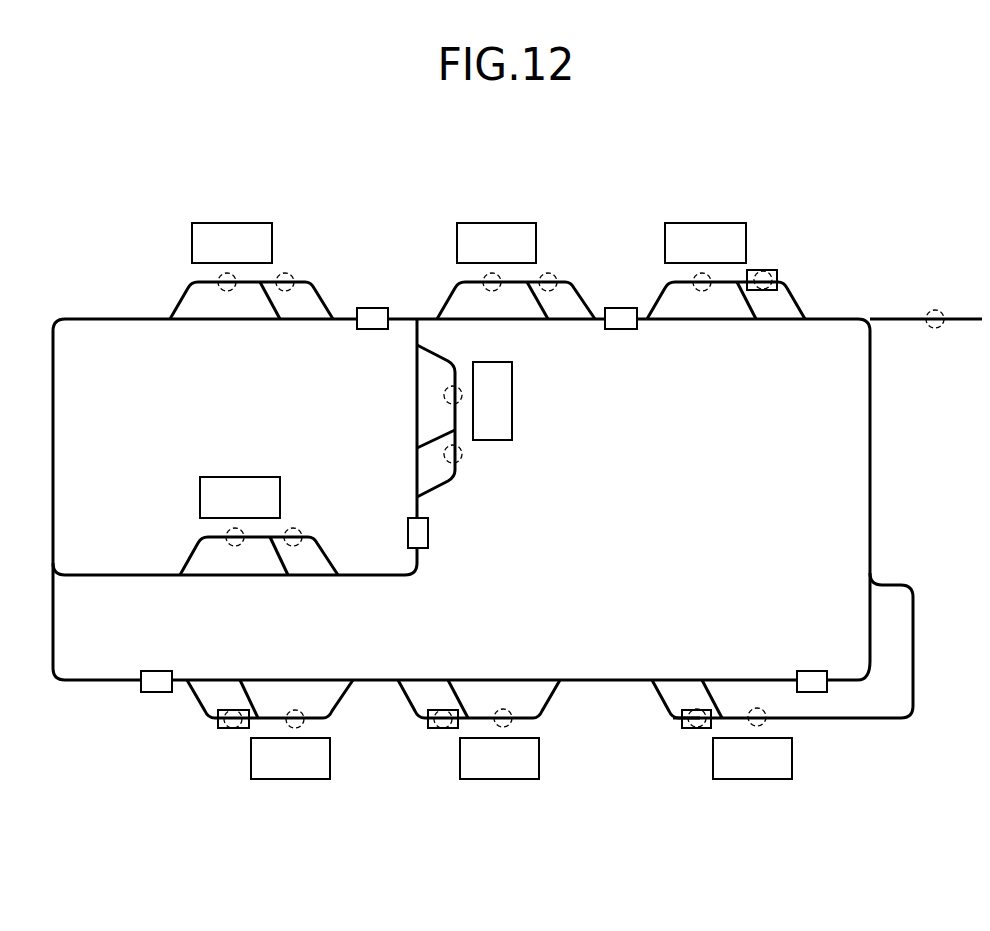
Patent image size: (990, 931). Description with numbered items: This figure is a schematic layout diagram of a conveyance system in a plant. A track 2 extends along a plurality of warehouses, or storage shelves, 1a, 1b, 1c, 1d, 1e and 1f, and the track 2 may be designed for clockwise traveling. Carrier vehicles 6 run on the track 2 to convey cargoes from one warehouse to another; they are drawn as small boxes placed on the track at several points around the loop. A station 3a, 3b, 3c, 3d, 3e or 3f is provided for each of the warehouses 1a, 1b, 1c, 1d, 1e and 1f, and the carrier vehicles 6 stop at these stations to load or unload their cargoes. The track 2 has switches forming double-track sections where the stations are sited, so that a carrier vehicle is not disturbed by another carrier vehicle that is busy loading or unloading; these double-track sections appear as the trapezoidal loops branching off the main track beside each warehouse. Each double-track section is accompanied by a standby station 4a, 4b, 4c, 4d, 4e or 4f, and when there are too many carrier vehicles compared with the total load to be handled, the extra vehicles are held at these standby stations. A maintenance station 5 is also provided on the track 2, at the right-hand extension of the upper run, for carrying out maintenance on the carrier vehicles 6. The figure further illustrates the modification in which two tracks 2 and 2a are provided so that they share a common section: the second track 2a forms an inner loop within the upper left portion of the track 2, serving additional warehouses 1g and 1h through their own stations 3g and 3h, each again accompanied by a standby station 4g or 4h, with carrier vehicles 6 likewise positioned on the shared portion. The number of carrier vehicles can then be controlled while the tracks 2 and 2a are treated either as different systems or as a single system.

The warehouse 1a is at (233, 243).
The warehouse 1b is at (497, 243).
The warehouse 1c is at (704, 243).
The warehouse 1d is at (755, 765).
The warehouse 1e is at (500, 765).
The warehouse 1f is at (291, 765).
The warehouse 1g is at (497, 395).
The warehouse 1h is at (218, 494).
The track 2 is at (140, 318).
The track 2a is at (145, 573).
The station 3a is at (225, 275).
The station 3b is at (490, 275).
The station 3c is at (700, 275).
The station 3d is at (760, 728).
The station 3e is at (505, 728).
The station 3f is at (297, 728).
The station 3g is at (444, 393).
The station 3h is at (238, 546).
The standby station 4a is at (287, 274).
The standby station 4b is at (551, 274).
The standby station 4c is at (766, 274).
The standby station 4d is at (688, 728).
The standby station 4e is at (437, 728).
The standby station 4f is at (228, 728).
The standby station 4g is at (462, 456).
The standby station 4h is at (296, 530).
The maintenance station 5 is at (938, 316).
The carrier vehicle 6 is at (373, 320).